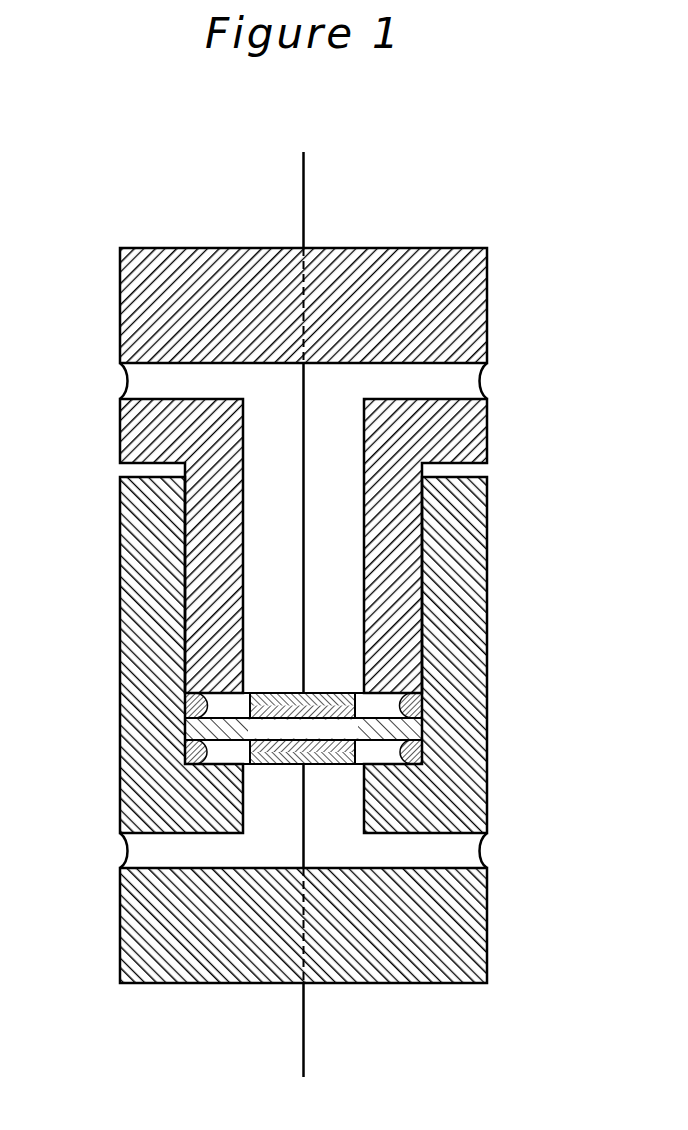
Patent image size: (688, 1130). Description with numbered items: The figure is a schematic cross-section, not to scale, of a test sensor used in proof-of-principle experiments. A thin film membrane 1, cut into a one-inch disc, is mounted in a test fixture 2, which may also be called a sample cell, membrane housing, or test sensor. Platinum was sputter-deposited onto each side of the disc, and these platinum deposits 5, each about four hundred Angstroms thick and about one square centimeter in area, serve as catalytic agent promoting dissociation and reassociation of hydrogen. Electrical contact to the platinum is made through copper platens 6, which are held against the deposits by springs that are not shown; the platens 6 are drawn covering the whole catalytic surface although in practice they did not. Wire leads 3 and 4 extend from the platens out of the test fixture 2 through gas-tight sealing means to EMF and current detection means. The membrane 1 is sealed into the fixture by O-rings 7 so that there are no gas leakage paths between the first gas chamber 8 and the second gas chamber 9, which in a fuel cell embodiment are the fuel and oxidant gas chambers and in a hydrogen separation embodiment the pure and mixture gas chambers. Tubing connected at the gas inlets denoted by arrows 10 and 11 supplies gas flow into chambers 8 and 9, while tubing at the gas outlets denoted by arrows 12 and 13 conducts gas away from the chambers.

The membrane 1 is at (303, 718).
The test fixture 2 is at (303, 616).
The wire lead 3 is at (294, 422).
The wire lead 4 is at (300, 920).
The platinum deposits 5 is at (316, 717).
The copper platens 6 is at (302, 725).
The O-rings 7 is at (299, 730).
The first gas chamber 8 is at (280, 839).
The second gas chamber 9 is at (280, 523).
The gas inlet arrow 10 is at (82, 860).
The gas inlet arrow 11 is at (83, 366).
The gas outlet arrow 12 is at (520, 863).
The gas outlet arrow 13 is at (522, 368).